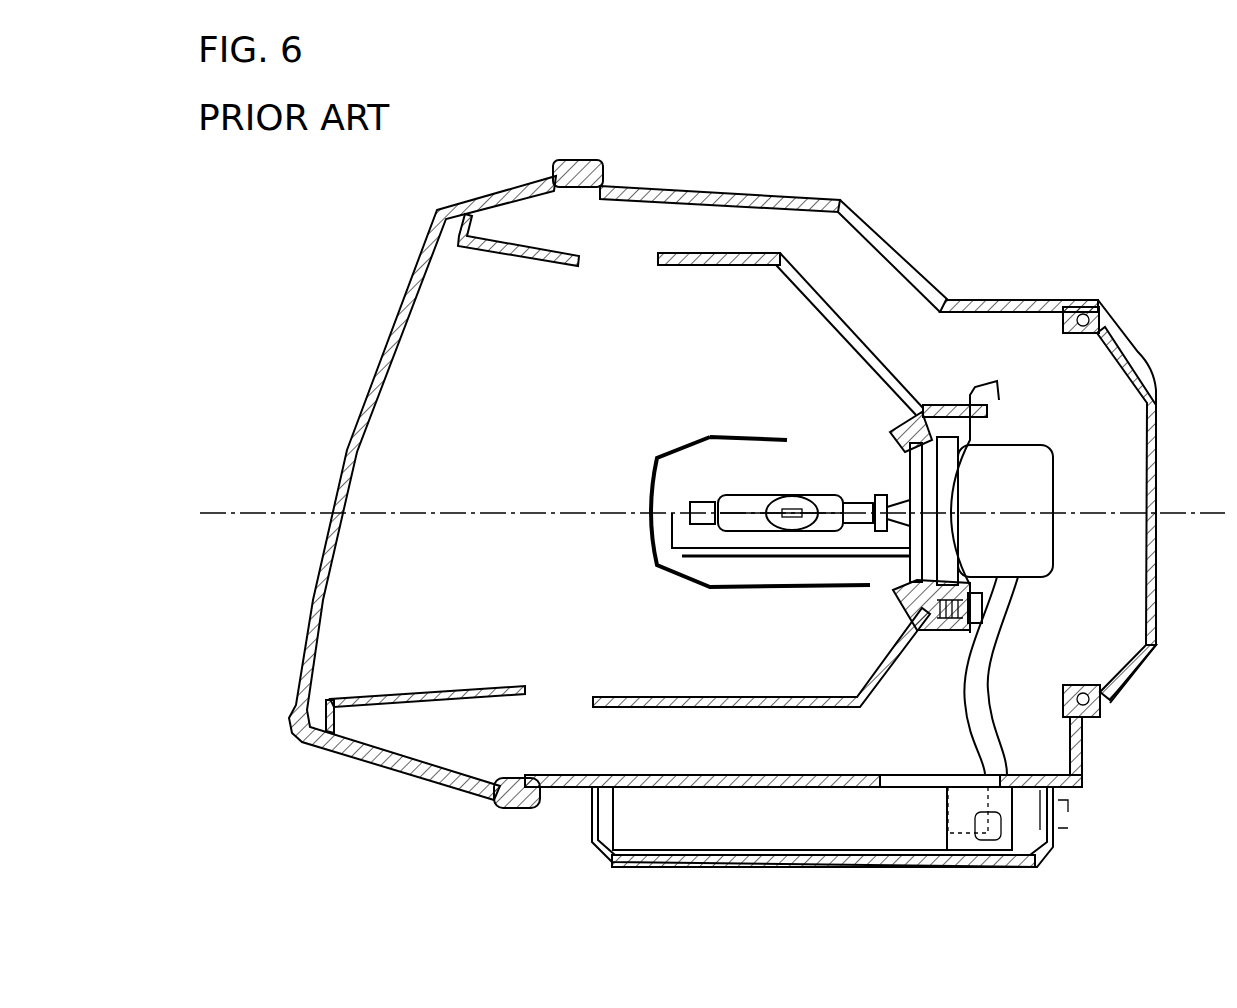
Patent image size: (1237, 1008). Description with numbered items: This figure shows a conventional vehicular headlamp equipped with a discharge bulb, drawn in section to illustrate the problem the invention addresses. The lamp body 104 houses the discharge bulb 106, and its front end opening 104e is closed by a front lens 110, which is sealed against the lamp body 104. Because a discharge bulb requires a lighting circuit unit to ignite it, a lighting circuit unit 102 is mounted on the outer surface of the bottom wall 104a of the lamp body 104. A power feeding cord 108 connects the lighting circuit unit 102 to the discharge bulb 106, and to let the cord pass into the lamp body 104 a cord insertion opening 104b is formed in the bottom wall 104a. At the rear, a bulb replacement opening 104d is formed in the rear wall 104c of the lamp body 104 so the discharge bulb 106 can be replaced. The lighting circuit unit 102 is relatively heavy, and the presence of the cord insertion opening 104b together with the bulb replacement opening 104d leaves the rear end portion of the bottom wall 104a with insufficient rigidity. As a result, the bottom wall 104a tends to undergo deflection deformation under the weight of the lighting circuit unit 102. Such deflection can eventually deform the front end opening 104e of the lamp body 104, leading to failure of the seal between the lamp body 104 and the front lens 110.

The lighting circuit unit 102 is at (797, 833).
The lamp body 104 is at (905, 250).
The bottom wall 104a is at (738, 773).
The cord insertion opening 104b is at (943, 780).
The rear wall 104c is at (1072, 735).
The bulb replacement opening 104d is at (1100, 710).
The front end opening 104e is at (495, 776).
The discharge bulb 106 is at (800, 492).
The power feeding cord 108 is at (998, 635).
The front lens 110 is at (383, 334).